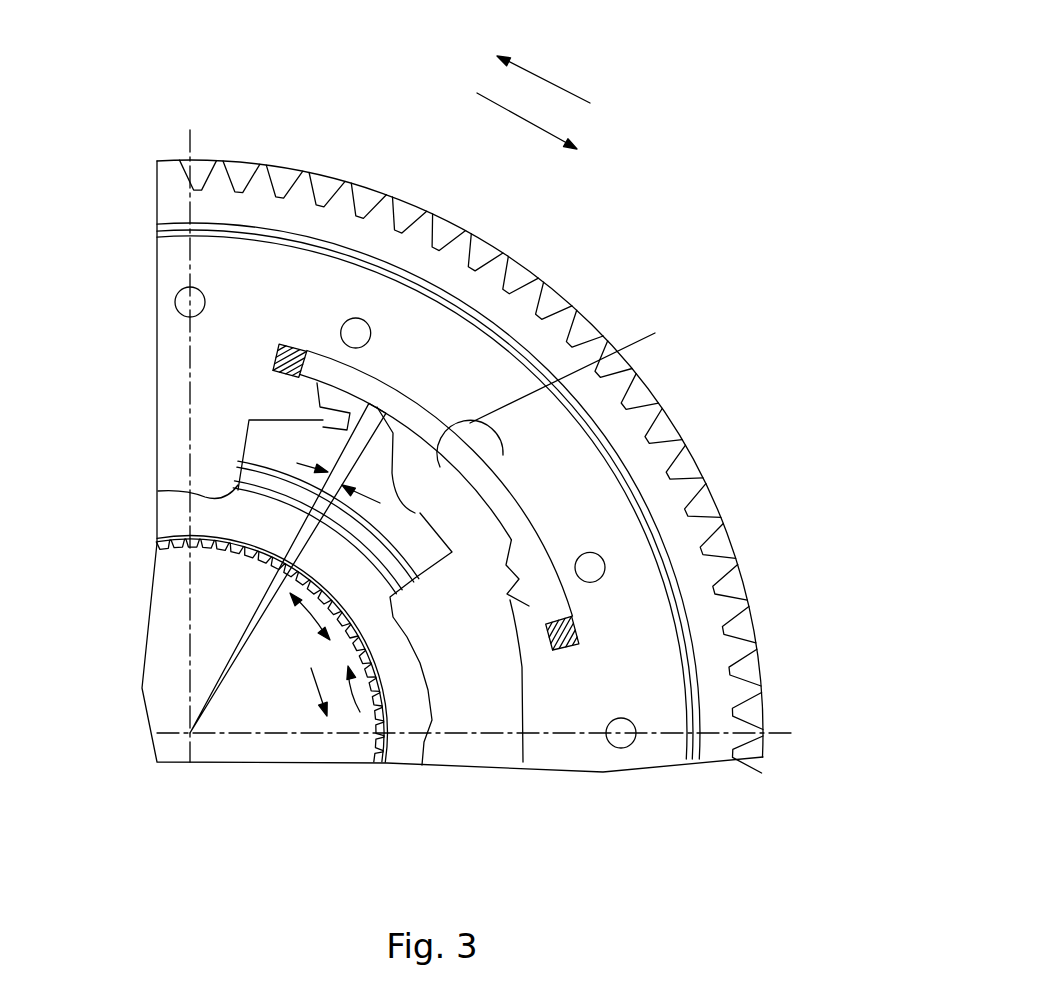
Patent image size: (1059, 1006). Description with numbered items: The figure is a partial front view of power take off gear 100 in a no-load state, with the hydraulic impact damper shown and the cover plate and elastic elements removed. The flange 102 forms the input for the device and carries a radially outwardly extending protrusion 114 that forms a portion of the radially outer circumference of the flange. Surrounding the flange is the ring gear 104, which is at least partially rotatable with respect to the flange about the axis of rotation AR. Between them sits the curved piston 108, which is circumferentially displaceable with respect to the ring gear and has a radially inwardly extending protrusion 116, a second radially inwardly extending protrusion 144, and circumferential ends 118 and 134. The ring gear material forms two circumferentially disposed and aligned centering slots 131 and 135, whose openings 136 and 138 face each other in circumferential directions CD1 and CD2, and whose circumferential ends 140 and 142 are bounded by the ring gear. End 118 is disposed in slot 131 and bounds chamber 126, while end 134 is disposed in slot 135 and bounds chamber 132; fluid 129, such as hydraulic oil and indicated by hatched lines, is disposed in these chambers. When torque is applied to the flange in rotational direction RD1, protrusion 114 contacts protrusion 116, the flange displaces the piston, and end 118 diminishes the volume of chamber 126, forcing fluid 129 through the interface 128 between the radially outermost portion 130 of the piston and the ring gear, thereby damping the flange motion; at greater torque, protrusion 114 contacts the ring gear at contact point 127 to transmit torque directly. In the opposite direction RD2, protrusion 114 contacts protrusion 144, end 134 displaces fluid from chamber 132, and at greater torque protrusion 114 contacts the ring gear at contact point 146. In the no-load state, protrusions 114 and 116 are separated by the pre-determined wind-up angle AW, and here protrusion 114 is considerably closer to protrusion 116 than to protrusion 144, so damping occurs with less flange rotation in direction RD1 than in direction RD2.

The power take off gear 100 is at (693, 110).
The flange 102 is at (437, 523).
The ring gear 104 is at (708, 474).
The curved piston 108 is at (482, 441).
The radially outwardly extending protrusion 114 is at (490, 425).
The radially inwardly extending protrusion 116 is at (410, 400).
The circumferential end 118 is at (287, 344).
The chamber 126 is at (297, 345).
The contact point 127 is at (312, 435).
The interface 128 is at (410, 318).
The fluid 129 is at (277, 367).
The radially outermost portion 130 is at (303, 342).
The slot 131 is at (356, 318).
The chamber 132 is at (580, 641).
The circumferential end 134 is at (567, 656).
The slot 135 is at (582, 625).
The opening 136 is at (372, 450).
The opening 138 is at (538, 612).
The circumferential end 140 is at (280, 347).
The circumferential end 142 is at (707, 757).
The radially inwardly extending protrusion 144 is at (548, 578).
The contact point 146 is at (572, 600).
The wind-up angle AW is at (303, 468).
The axis of rotation AR is at (190, 733).
The rotational direction RD1 is at (352, 715).
The rotational direction RD2 is at (317, 688).
The circumferential direction CD1 is at (513, 108).
The circumferential direction CD2 is at (562, 88).